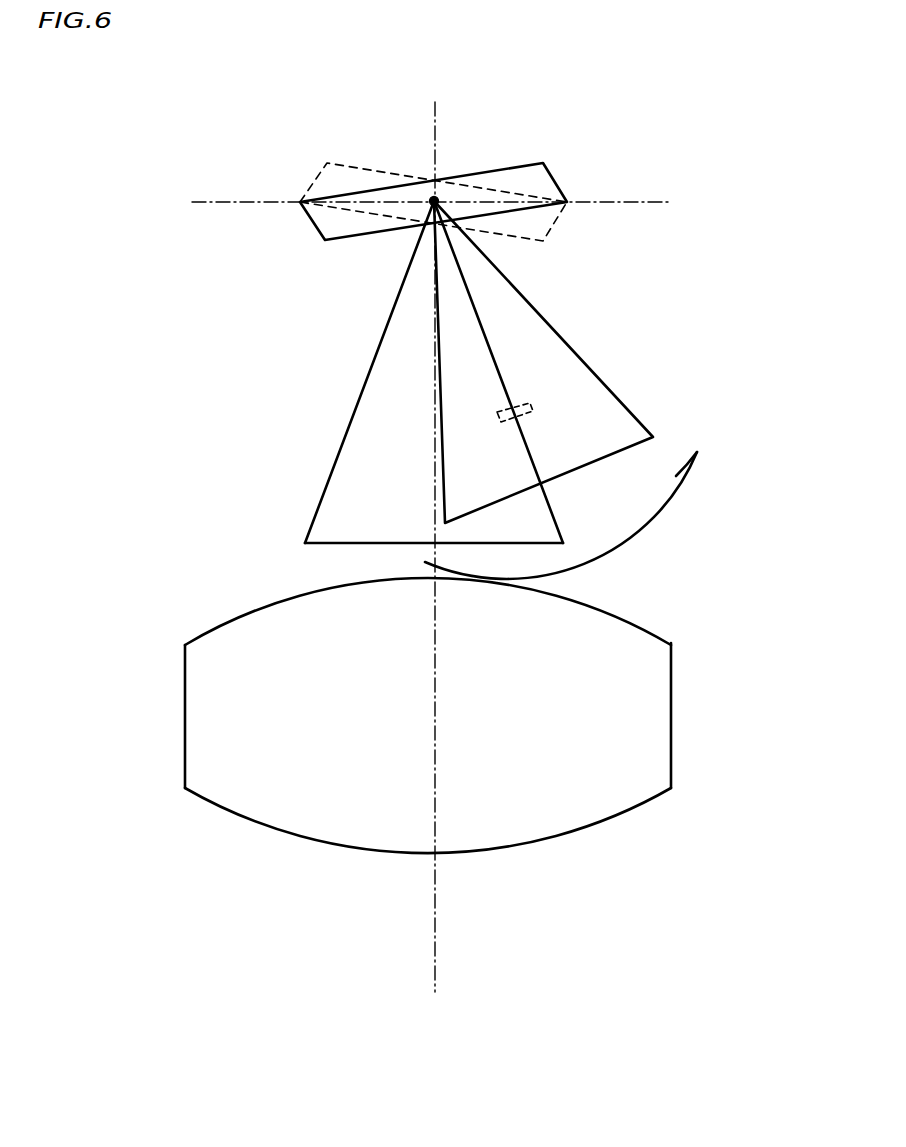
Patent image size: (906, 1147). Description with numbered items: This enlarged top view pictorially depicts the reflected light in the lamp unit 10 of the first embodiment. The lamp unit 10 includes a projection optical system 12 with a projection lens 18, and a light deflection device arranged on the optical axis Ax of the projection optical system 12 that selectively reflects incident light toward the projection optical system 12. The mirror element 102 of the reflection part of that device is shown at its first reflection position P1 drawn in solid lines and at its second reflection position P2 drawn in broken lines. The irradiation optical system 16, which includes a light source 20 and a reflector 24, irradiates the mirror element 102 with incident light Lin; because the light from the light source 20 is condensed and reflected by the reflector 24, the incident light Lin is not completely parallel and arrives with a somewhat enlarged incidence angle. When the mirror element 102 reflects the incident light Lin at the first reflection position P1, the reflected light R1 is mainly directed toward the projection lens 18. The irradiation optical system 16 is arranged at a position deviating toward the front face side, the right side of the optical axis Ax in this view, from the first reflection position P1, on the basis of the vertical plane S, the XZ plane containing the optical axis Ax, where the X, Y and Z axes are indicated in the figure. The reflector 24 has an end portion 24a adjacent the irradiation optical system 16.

The mirror element 102 is at (432, 166).
The first reflection position P1 is at (552, 175).
The second reflection position P2 is at (323, 172).
The Z axis Z is at (433, 200).
The Y axis Y is at (443, 203).
The X axis X is at (434, 1011).
The optical axis Ax is at (436, 942).
The reflected light R1 is at (377, 405).
The vertical plane S is at (433, 477).
The incident light Lin is at (550, 333).
The light source 20 is at (530, 404).
The reflector 24 is at (687, 475).
The end portion of rotation path 24a is at (672, 482).
The irradiation optical system 16 is at (603, 498).
The projection optical system 12 is at (482, 715).
The projection lens 18 is at (671, 710).
The lamp unit 10 is at (452, 1104).